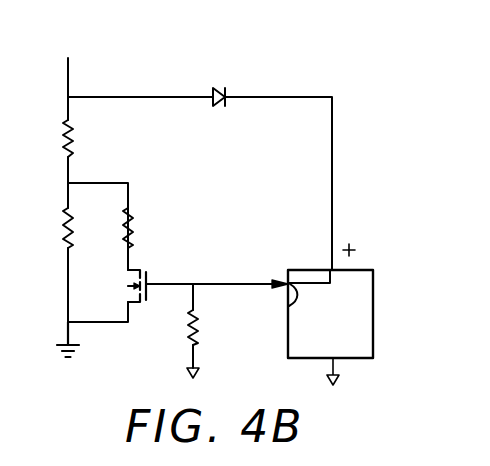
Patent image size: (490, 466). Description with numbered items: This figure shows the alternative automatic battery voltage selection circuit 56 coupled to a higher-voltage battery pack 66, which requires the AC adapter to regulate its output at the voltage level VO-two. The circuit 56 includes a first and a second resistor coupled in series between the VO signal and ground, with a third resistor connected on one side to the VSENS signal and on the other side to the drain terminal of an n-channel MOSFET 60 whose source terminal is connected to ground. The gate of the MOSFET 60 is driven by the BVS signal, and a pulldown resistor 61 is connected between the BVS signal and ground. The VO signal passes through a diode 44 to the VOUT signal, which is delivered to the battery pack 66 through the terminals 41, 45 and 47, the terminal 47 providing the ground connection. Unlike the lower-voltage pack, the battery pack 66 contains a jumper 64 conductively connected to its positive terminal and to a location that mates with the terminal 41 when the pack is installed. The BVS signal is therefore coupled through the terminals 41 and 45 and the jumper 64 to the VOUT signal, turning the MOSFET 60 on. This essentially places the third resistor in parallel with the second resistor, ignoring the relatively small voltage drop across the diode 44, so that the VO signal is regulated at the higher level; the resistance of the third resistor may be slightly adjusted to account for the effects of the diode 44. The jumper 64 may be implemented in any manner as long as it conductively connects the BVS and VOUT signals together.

The automatic battery voltage selection circuit 56 is at (162, 57).
The diode 44 is at (223, 88).
The n-channel MOSFET 60 is at (128, 265).
The pulldown resistor 61 is at (185, 325).
The terminal 45 is at (330, 268).
The battery pack 66 is at (308, 270).
The terminal 41 is at (288, 283).
The jumper 64 is at (296, 298).
The terminal 47 is at (335, 366).